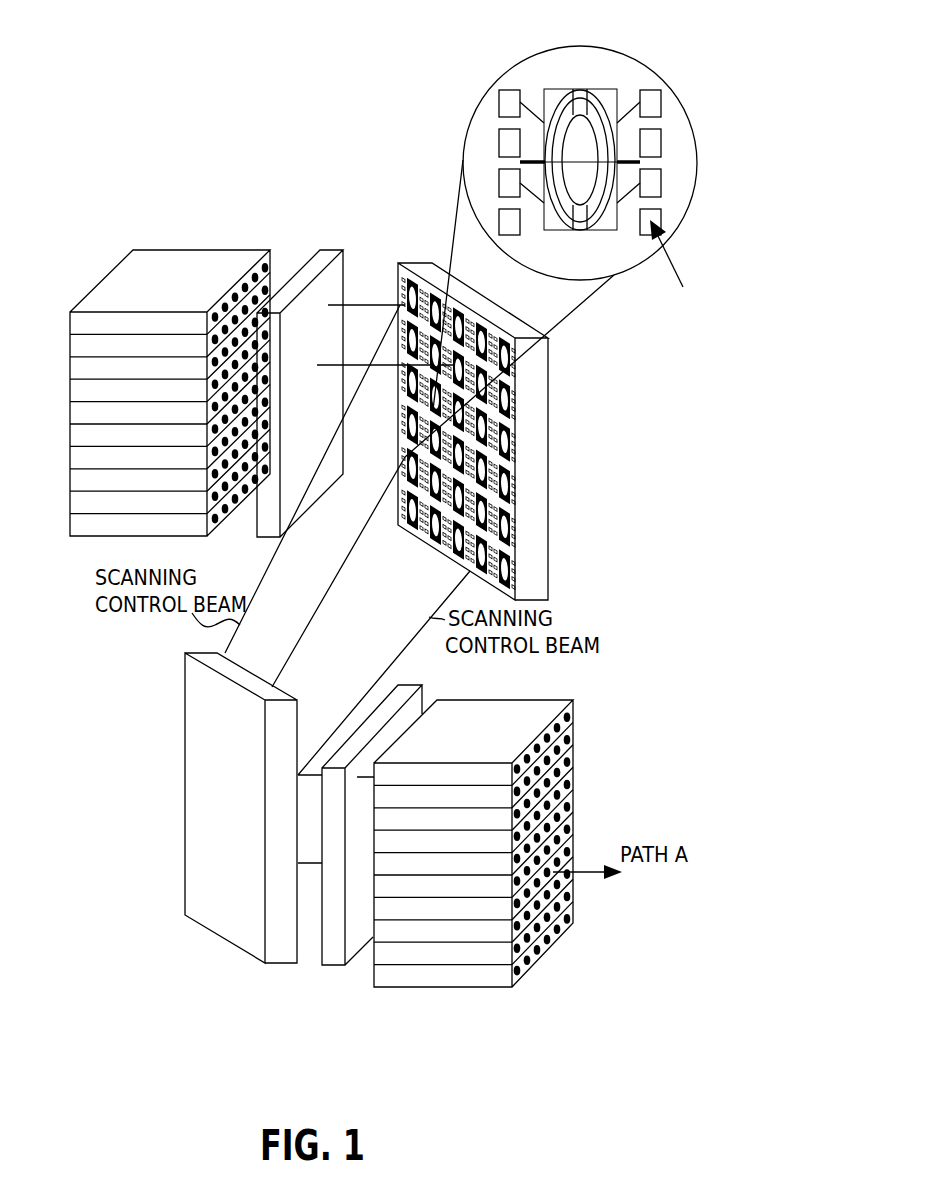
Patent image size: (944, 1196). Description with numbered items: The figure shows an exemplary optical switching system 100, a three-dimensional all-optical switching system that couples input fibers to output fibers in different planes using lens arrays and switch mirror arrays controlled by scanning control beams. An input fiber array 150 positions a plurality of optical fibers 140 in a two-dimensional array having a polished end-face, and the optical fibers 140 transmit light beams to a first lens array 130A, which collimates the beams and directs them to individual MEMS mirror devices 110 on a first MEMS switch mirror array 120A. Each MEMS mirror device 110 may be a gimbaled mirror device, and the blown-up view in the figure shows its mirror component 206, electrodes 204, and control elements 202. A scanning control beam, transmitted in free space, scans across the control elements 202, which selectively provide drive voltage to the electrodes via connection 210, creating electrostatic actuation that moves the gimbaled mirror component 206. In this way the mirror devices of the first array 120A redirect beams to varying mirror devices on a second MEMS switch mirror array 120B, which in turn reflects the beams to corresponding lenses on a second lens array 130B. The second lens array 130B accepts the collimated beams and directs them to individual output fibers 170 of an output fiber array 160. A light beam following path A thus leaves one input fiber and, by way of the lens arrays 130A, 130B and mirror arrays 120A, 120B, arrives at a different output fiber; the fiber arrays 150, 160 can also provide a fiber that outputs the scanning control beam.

The optical switching system 100 is at (112, 855).
The MEMS mirror device 110 is at (590, 298).
The first MEMS switch mirror array 120A is at (550, 338).
The second MEMS switch mirror array 120B is at (185, 715).
The first lens array 130A is at (334, 250).
The second lens array 130B is at (415, 685).
The optical fibers 140 is at (222, 335).
The input fiber array 150 is at (231, 250).
The output fiber array 160 is at (562, 700).
The output fibers 170 is at (573, 787).
The control elements 202 is at (652, 101).
The electrodes 204 is at (603, 93).
The mirror component 206 is at (582, 138).
The connection 210 is at (535, 103).